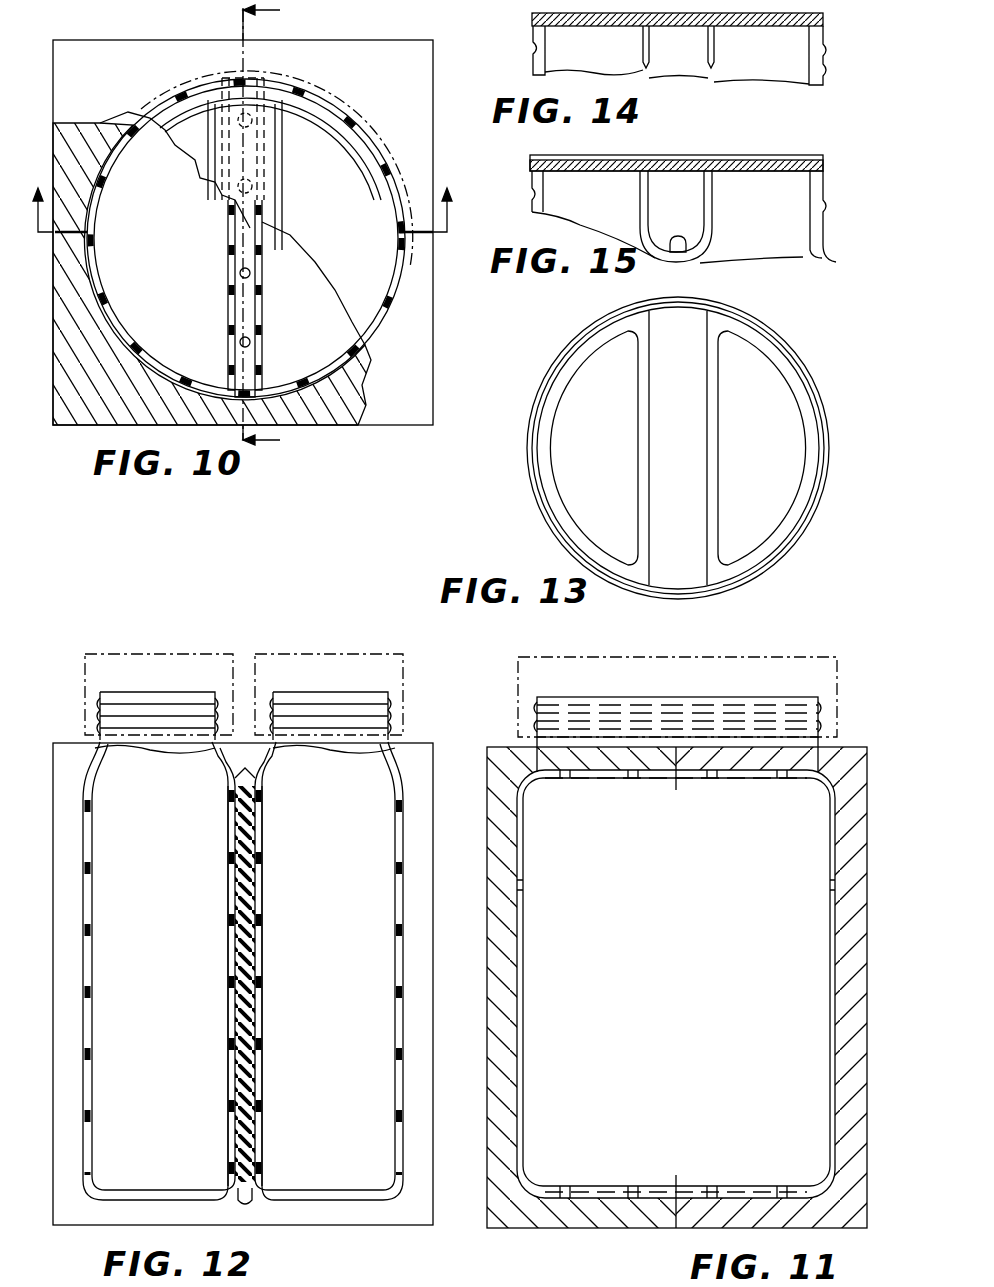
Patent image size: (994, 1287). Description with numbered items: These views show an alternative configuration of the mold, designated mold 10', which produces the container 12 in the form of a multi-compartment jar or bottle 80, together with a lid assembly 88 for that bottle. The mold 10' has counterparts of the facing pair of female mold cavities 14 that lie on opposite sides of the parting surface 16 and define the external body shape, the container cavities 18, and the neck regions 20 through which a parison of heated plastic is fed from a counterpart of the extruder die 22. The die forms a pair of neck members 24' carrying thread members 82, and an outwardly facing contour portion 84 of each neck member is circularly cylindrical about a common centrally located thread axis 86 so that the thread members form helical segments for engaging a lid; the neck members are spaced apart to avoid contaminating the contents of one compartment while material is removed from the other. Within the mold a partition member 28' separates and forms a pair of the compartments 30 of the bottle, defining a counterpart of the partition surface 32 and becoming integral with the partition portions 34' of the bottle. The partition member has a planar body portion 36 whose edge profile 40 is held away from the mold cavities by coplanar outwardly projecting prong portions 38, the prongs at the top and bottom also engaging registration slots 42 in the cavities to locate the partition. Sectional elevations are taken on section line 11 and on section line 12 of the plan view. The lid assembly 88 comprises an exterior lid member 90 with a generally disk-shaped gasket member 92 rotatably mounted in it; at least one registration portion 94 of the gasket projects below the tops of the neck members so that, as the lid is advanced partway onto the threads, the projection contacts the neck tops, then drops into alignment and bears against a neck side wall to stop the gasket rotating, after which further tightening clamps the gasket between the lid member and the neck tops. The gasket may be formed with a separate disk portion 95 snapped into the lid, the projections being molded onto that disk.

In FIG. 10, the mold 10' is at (80, 472).
In FIG. 12, the mold 10' is at (75, 1245).
In FIG. 11, the mold 10' is at (606, 1258).
In FIG. 10, the section line 11— 11 is at (294, 233).
In FIG. 10, the container 12 is at (247, 193).
In FIG. 10, the mold cavities 14 is at (398, 26).
In FIG. 12, the mold cavities 14 is at (406, 1226).
In FIG. 11, the mold cavities 14 is at (693, 1228).
In FIG. 10, the parting surface 16 is at (447, 232).
In FIG. 10, the container cavities 18 is at (159, 297).
In FIG. 10, the neck regions 20 is at (196, 146).
In FIG. 12, the extruder die 22 is at (277, 654).
In FIG. 11, the extruder die 22 is at (518, 661).
In FIG. 10, the neck members 24' is at (251, 184).
In FIG. 15, the neck members 24' is at (700, 216).
In FIG. 12, the neck members 24' is at (245, 702).
In FIG. 11, the neck members 24' is at (677, 716).
In FIG. 10, the partition member 28' is at (229, 237).
In FIG. 12, the partition member 28' is at (270, 986).
In FIG. 11, the partition member 28' is at (683, 987).
In FIG. 10, the compartments 30 is at (173, 251).
In FIG. 12, the compartments 30 is at (176, 981).
In FIG. 10, the partition surface 32 is at (243, 30).
In FIG. 10, the partition portions 34' is at (263, 253).
In FIG. 12, the body portion 36 is at (257, 823).
In FIG. 10, the prong portions 38 is at (228, 345).
In FIG. 12, the prong portions 38 is at (262, 773).
In FIG. 11, the prong portions 38 is at (528, 872).
In FIG. 11, the edge profile 40 is at (522, 940).
In FIG. 10, the registration slots 42 is at (262, 308).
In FIG. 12, the registration slots 42 is at (238, 772).
In FIG. 10, the bottle 80 is at (372, 128).
In FIG. 14, the bottle 80 is at (822, 70).
In FIG. 15, the bottle 80 is at (828, 250).
In FIG. 12, the bottle 80 is at (320, 1198).
In FIG. 10, the thread members 82 is at (140, 125).
In FIG. 12, the thread members 82 is at (100, 706).
In FIG. 10, the contour portion 84 is at (170, 108).
In FIG. 10, the thread axis 86 is at (248, 233).
In FIG. 14, the lid assembly 88 is at (677, 44).
In FIG. 15, the lid assembly 88 is at (703, 193).
In FIG. 13, the lid assembly 88 is at (541, 520).
In FIG. 14, the lid member 90 is at (535, 30).
In FIG. 15, the lid member 90 is at (742, 160).
In FIG. 13, the lid member 90 is at (532, 470).
In FIG. 14, the gasket member 92 is at (823, 18).
In FIG. 15, the gasket member 92 is at (823, 163).
In FIG. 13, the gasket member 92 is at (640, 575).
In FIG. 14, the registration portion 94 is at (580, 30).
In FIG. 15, the registration portion 94 is at (570, 172).
In FIG. 13, the registration portion 94 is at (613, 496).
In FIG. 14, the disk portion 95 is at (538, 62).